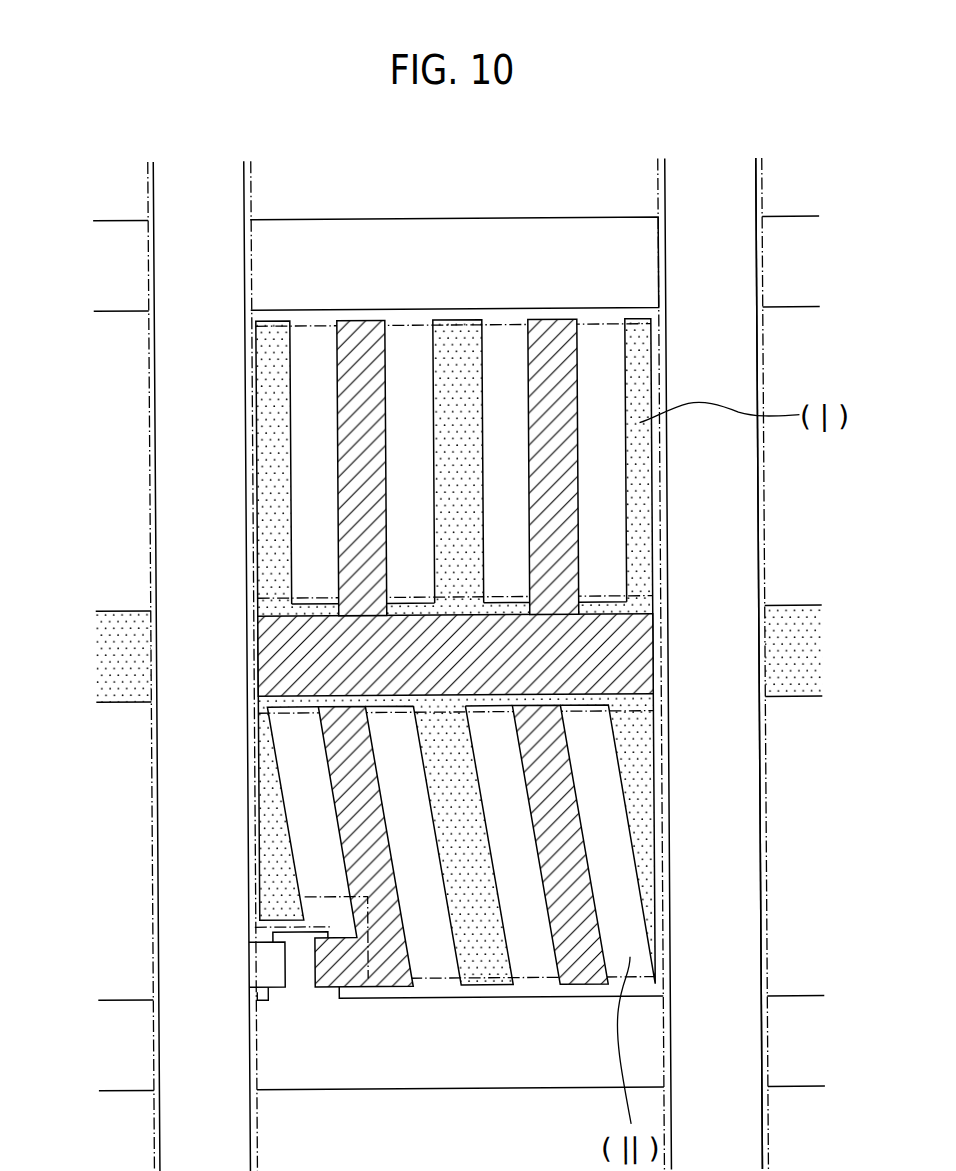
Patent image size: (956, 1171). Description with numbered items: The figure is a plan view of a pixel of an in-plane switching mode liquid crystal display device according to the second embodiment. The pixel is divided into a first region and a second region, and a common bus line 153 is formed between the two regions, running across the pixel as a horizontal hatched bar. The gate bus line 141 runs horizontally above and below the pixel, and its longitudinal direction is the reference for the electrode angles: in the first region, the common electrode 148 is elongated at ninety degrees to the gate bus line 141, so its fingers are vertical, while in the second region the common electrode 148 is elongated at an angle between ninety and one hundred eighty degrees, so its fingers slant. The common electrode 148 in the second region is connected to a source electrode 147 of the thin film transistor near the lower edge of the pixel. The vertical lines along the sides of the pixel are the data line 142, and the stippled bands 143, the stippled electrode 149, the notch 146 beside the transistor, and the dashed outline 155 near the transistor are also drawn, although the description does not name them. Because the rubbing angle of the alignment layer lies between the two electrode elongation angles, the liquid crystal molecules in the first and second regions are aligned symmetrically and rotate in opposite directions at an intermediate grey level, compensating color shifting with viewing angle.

The gate bus line 141 is at (567, 232).
The data line 142 is at (760, 889).
The common line 143 is at (86, 609).
The source electrode 146 is at (263, 960).
The source electrode 147 is at (349, 961).
The common electrode 148 is at (356, 347).
The pixel electrode 149 is at (460, 343).
The common bus line 153 is at (283, 664).
The contact hole 155 is at (295, 986).